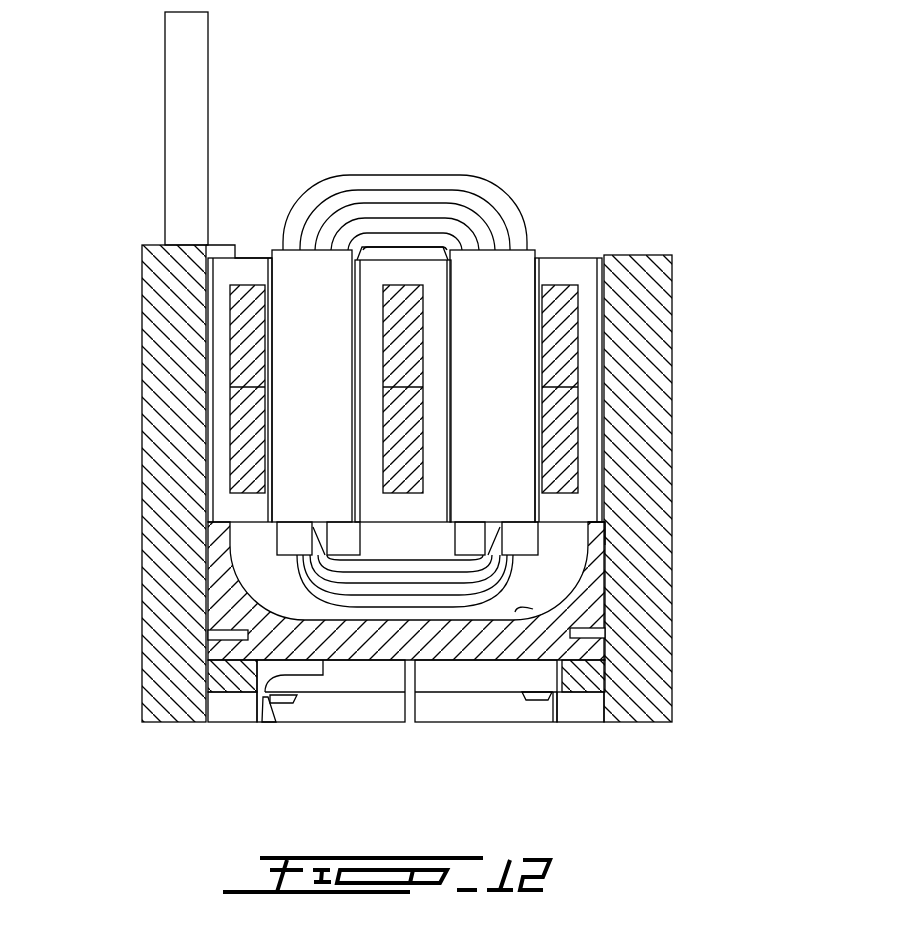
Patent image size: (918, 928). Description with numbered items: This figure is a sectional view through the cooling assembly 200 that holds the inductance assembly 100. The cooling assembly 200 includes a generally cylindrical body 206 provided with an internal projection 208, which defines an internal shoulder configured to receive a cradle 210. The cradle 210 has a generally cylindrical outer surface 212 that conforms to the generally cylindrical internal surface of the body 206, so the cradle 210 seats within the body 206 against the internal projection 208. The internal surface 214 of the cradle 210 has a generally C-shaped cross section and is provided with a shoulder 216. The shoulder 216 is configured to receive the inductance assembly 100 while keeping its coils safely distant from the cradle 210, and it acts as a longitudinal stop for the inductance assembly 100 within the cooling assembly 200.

The inductance assembly 100 is at (566, 228).
The housing 200 is at (505, 367).
The body 206 is at (645, 596).
The internal projection 208 is at (516, 734).
The cradle 210 is at (418, 643).
The outer surface 212 is at (260, 697).
The internal surface 214 is at (515, 607).
The shoulder 216 is at (603, 507).